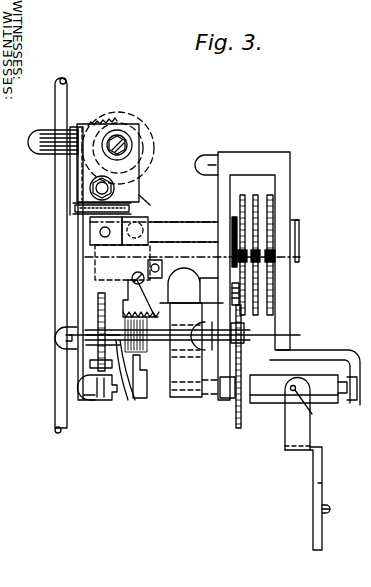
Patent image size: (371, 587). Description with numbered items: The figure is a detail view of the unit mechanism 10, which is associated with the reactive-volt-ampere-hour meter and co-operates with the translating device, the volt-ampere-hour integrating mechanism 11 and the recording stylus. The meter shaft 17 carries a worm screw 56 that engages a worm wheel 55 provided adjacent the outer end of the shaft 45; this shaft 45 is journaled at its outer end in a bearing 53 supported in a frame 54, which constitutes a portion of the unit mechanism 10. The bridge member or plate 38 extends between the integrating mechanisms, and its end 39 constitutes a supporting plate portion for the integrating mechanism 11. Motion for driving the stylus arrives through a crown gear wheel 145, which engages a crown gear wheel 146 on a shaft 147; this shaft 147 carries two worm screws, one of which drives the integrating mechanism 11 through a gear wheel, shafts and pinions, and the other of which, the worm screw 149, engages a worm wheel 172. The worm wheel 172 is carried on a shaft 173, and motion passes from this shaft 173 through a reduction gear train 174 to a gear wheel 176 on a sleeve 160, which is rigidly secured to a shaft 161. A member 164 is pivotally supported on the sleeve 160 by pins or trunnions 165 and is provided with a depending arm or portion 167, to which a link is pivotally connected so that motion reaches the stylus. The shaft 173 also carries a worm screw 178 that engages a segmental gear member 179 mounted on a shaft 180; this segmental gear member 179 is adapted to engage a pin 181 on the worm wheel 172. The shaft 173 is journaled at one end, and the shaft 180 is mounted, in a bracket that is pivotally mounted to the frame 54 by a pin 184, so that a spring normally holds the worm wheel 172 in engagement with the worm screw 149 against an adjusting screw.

The unit mechanism 10 is at (206, 146).
The volt-ampere-hour integrating mechanism 11 is at (273, 212).
The shaft 17 is at (56, 190).
The bridge member or plate 38 is at (285, 166).
The end of bridge member 39 is at (283, 332).
The shaft 45 is at (148, 158).
The bearing 53 is at (122, 148).
The frame 54 is at (116, 187).
The worm wheel 55 is at (104, 118).
The worm screw 56 is at (38, 145).
The crown gear wheel 145 is at (148, 198).
The crown gear wheel 146 is at (80, 217).
The shaft 147 is at (100, 290).
The worm screw 149 is at (122, 395).
The sleeve 160 is at (271, 397).
The shaft 161 is at (214, 386).
The member 164 is at (286, 446).
The pins or trunnions 165 is at (310, 412).
The depending arm or portion 167 is at (322, 509).
The worm wheel 172 is at (85, 350).
The shaft 173 is at (159, 350).
The reduction gear train 174 is at (245, 323).
The gear wheel 176 is at (236, 420).
The worm screw 178 is at (147, 392).
The segmental gear member 179 is at (125, 310).
The shaft 180 is at (105, 275).
The pin 181 is at (125, 313).
The pin 184 is at (100, 398).